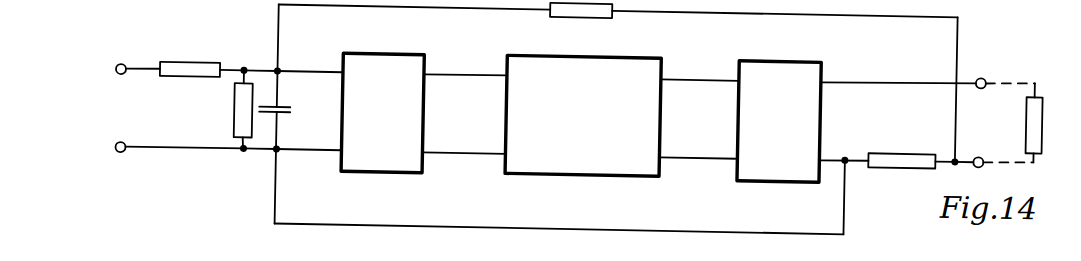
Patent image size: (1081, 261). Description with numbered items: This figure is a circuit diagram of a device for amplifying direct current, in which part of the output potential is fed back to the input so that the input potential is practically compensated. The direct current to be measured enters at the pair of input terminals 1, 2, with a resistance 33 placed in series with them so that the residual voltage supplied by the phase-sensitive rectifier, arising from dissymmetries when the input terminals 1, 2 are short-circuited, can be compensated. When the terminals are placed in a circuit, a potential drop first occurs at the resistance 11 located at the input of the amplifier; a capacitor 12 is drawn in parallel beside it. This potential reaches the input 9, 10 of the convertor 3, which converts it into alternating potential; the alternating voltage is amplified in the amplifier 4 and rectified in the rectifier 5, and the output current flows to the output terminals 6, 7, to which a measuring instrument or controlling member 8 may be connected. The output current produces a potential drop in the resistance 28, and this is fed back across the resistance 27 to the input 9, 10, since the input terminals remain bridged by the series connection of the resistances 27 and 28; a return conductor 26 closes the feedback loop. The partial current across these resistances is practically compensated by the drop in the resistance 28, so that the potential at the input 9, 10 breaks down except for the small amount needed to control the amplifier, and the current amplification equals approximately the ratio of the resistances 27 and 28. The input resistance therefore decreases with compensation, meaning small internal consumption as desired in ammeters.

The input terminal 1 is at (127, 69).
The input terminal 2 is at (168, 149).
The resistance 33 is at (202, 54).
The resistance 11 is at (227, 109).
The capacitor 12 is at (288, 110).
The input 9 is at (310, 86).
The input 10 is at (308, 137).
The convertor 3 is at (382, 113).
The amplifier 4 is at (583, 115).
The rectifier 5 is at (779, 122).
The resistance 27 is at (617, 81).
The resistance 28 is at (911, 148).
The output terminal 6 is at (928, 72).
The output terminal 7 is at (994, 149).
The measuring instrument or controlling member 8 is at (1041, 123).
The feedback conductor 26 is at (536, 198).